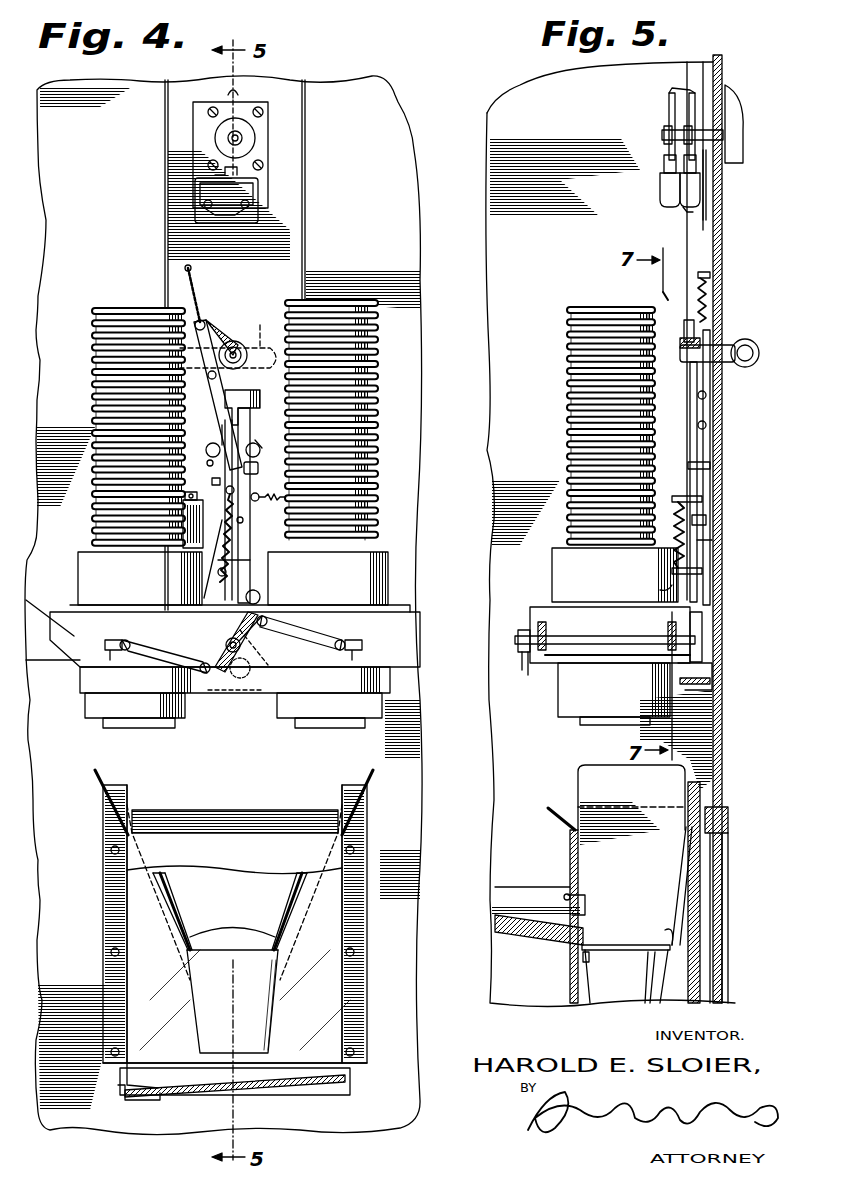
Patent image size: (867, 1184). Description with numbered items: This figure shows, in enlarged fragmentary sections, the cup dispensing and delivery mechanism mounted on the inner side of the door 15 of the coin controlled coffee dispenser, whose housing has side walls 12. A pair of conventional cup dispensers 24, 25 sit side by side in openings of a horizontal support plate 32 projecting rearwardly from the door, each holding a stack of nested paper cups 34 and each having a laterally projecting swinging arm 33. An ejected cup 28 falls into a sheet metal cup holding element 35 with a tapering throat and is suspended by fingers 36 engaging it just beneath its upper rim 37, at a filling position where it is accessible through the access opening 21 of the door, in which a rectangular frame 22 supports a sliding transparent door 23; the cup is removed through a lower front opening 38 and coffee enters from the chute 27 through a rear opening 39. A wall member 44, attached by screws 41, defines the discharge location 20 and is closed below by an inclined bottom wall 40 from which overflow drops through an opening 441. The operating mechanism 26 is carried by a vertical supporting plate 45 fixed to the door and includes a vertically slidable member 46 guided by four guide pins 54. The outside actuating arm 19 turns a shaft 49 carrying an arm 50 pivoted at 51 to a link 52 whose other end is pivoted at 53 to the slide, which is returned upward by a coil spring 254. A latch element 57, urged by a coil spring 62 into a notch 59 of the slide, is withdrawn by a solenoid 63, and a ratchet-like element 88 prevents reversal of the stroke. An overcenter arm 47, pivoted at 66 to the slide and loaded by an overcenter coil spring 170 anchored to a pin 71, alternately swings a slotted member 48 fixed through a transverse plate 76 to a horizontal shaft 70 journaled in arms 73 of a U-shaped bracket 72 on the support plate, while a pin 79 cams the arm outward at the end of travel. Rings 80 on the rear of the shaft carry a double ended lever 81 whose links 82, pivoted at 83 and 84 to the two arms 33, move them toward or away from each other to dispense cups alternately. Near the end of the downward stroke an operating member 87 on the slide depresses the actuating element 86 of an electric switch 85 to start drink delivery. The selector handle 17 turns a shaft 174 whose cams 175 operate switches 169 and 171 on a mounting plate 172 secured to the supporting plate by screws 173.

In FIG. 5, the side wall 12 is at (490, 176).
In FIG. 4, the door 15 is at (400, 252).
In FIG. 5, the door 15 is at (722, 726).
In FIG. 4, the selector handle 17 is at (238, 96).
In FIG. 5, the selector handle 17 is at (740, 116).
In FIG. 4, the actuating arm 19 is at (229, 342).
In FIG. 5, the actuating arm 19 is at (758, 356).
In FIG. 5, the discharge location 20 is at (700, 877).
In FIG. 5, the access opening 21 is at (728, 840).
In FIG. 5, the rectangular frame 22 is at (728, 814).
In FIG. 5, the transparent door 23 is at (728, 930).
In FIG. 4, the cup dispenser 24 is at (78, 572).
In FIG. 5, the cup dispenser 24 is at (552, 568).
In FIG. 4, the cup dispenser 25 is at (388, 562).
In FIG. 4, the mechanism 26 is at (225, 292).
In FIG. 5, the mechanism 26 is at (646, 291).
In FIG. 5, the chute 27 is at (530, 930).
In FIG. 4, the cup 28 is at (250, 1034).
In FIG. 5, the cup 28 is at (585, 986).
In FIG. 5, the support plate 32 is at (570, 665).
In FIG. 4, the arm 33 is at (100, 640).
In FIG. 4, the paper cups 34 is at (120, 308).
In FIG. 5, the paper cups 34 is at (567, 413).
In FIG. 4, the cup holding element 35 is at (370, 780).
In FIG. 5, the cup holding element 35 is at (578, 781).
In FIG. 4, the fingers 36 is at (185, 960).
In FIG. 5, the fingers 36 is at (590, 966).
In FIG. 4, the upper rim 37 is at (245, 948).
In FIG. 5, the upper rim 37 is at (618, 945).
In FIG. 4, the lower front opening 38 is at (218, 925).
In FIG. 5, the lower front opening 38 is at (665, 930).
In FIG. 5, the rear opening 39 is at (588, 906).
In FIG. 4, the inclined bottom wall 40 is at (185, 1095).
In FIG. 4, the screws 41 is at (110, 850).
In FIG. 4, the wall member 44 is at (345, 909).
In FIG. 5, the wall member 44 is at (568, 866).
In FIG. 4, the supporting plate 45 is at (305, 252).
In FIG. 5, the supporting plate 45 is at (712, 245).
In FIG. 4, the slide member 46 is at (250, 533).
In FIG. 5, the slide member 46 is at (712, 486).
In FIG. 4, the overcenter arm 47 is at (210, 580).
In FIG. 5, the overcenter arm 47 is at (700, 563).
In FIG. 4, the slotted member 48 is at (243, 684).
In FIG. 5, the slotted member 48 is at (700, 670).
In FIG. 4, the shaft 49 is at (233, 341).
In FIG. 5, the shaft 49 is at (722, 340).
In FIG. 5, the arm 50 is at (682, 340).
In FIG. 4, the pivotal connection 51 is at (205, 322).
In FIG. 5, the pivotal connection 51 is at (684, 320).
In FIG. 4, the link 52 is at (222, 425).
In FIG. 5, the link 52 is at (690, 445).
In FIG. 4, the pivotal connection 53 is at (208, 465).
In FIG. 5, the pivotal connection 53 is at (688, 465).
In FIG. 4, the guide pins 54 is at (255, 443).
In FIG. 4, the latch element 57 is at (212, 480).
In FIG. 4, the notch 59 is at (231, 489).
In FIG. 4, the coil spring 62 is at (206, 455).
In FIG. 4, the solenoid 63 is at (183, 556).
In FIG. 4, the pivotal attachment 66 is at (243, 519).
In FIG. 5, the pivotal attachment 66 is at (706, 516).
In FIG. 4, the horizontal shaft 70 is at (215, 674).
In FIG. 5, the horizontal shaft 70 is at (610, 666).
In FIG. 5, the pin 71 is at (678, 496).
In FIG. 5, the U-shaped bracket 72 is at (612, 666).
In FIG. 5, the arms 73 is at (546, 632).
In FIG. 5, the transverse plate 76 is at (702, 638).
In FIG. 5, the pin 79 is at (658, 588).
In FIG. 4, the rings 80 is at (225, 644).
In FIG. 5, the rings 80 is at (540, 678).
In FIG. 4, the double ended lever 81 is at (258, 630).
In FIG. 5, the double ended lever 81 is at (518, 635).
In FIG. 4, the links 82 is at (158, 644).
In FIG. 5, the links 82 is at (515, 652).
In FIG. 4, the pivotal connection 83 is at (122, 640).
In FIG. 4, the pivotal connection 84 is at (345, 640).
In FIG. 4, the electric switch 85 is at (258, 464).
In FIG. 4, the actuating element 86 is at (268, 440).
In FIG. 4, the operating member 87 is at (252, 390).
In FIG. 4, the ratchet-like element 88 is at (257, 494).
In FIG. 4, the electric switch 169 is at (258, 190).
In FIG. 5, the electric switch 169 is at (662, 188).
In FIG. 4, the overcenter coil spring 170 is at (250, 561).
In FIG. 5, the overcenter coil spring 170 is at (680, 548).
In FIG. 5, the electric switch 171 is at (680, 206).
In FIG. 4, the mounting plate 172 is at (262, 160).
In FIG. 5, the mounting plate 172 is at (703, 188).
In FIG. 4, the screws 173 is at (262, 110).
In FIG. 4, the shaft 174 is at (229, 138).
In FIG. 5, the shaft 174 is at (662, 134).
In FIG. 4, the cams 175 is at (215, 128).
In FIG. 5, the cams 175 is at (672, 95).
In FIG. 5, the coil spring 254 is at (705, 296).
In FIG. 4, the opening 441 is at (140, 1100).